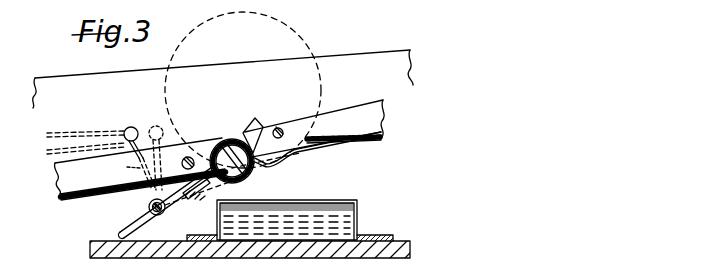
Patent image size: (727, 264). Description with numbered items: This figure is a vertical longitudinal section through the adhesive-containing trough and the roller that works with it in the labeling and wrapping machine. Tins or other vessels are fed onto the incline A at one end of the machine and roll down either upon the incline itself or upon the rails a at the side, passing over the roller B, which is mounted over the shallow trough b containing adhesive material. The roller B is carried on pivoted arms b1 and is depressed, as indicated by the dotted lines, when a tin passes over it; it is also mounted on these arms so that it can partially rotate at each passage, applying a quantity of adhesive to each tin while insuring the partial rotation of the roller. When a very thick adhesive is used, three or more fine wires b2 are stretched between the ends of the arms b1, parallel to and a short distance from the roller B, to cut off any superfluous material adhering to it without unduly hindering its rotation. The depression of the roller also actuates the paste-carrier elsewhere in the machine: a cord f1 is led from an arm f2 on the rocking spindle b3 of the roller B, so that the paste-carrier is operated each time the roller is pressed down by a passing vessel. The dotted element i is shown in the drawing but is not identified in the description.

The incline A is at (314, 128).
The rails a is at (297, 160).
The roller B is at (233, 141).
The trough b is at (287, 220).
The pivoted arms b1 is at (186, 196).
The fine wires b2 is at (259, 121).
The rocking spindle b3 is at (149, 209).
The cord f1 is at (124, 134).
The arm f2 is at (116, 170).
The cord i is at (47, 135).